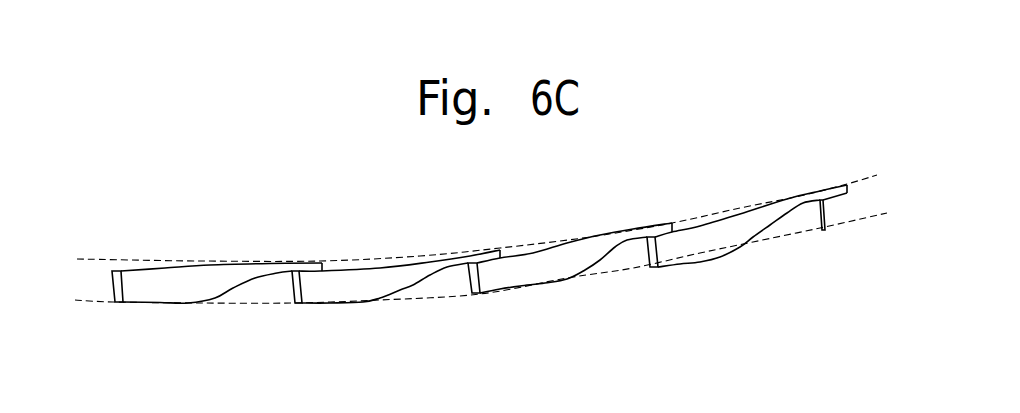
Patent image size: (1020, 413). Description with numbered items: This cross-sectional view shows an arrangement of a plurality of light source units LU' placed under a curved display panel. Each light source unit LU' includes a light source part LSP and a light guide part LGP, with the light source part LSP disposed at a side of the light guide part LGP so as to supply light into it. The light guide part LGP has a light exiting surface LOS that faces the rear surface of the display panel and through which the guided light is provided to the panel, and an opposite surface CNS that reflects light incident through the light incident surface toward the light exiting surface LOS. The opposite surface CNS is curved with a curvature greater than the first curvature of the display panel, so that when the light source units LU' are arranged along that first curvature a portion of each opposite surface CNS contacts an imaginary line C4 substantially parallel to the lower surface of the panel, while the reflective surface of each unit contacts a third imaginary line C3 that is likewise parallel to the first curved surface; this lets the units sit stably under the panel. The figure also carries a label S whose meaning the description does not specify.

The light source part LSP is at (114, 303).
The light guide part LGP is at (221, 284).
The opposite surface CNS is at (240, 319).
The light guide plate body / second light unit S is at (350, 290).
The light exiting surface LOS is at (211, 264).
The light source unit LU' is at (210, 302).
The third imaginary line C3 is at (492, 211).
The imaginary line C4 is at (496, 251).